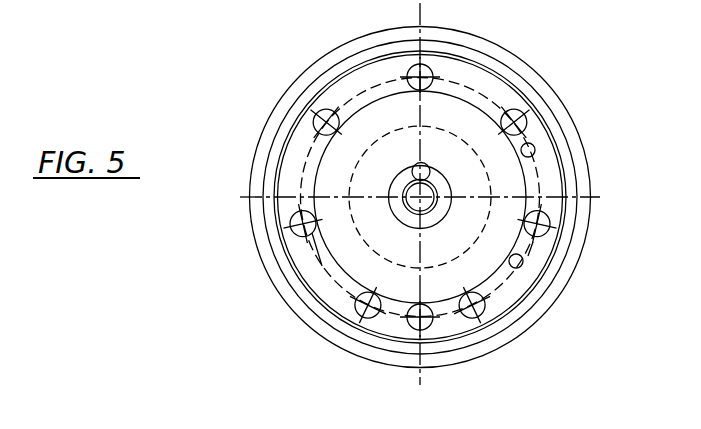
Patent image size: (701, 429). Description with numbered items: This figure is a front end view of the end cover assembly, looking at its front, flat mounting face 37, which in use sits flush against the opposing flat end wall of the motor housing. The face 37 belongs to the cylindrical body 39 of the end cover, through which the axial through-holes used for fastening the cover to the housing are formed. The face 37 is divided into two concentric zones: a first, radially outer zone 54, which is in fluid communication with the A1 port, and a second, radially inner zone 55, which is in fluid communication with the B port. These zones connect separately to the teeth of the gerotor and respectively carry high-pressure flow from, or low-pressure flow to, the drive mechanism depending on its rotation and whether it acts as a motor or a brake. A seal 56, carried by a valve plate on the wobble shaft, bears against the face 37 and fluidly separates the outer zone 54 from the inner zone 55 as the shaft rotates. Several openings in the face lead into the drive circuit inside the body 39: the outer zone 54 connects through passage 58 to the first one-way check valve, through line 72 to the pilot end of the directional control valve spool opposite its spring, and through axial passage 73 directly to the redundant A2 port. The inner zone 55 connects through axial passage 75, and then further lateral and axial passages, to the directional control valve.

The mounting face 37 is at (513, 289).
The cylindrical body 39 is at (278, 120).
The radially outer zone 54 is at (541, 250).
The radially inner zone 55 is at (450, 157).
The seal 56 is at (363, 237).
The passage 58 is at (522, 264).
The line 72 is at (534, 146).
The axial passage 73 is at (417, 325).
The axial passage 75 is at (416, 160).